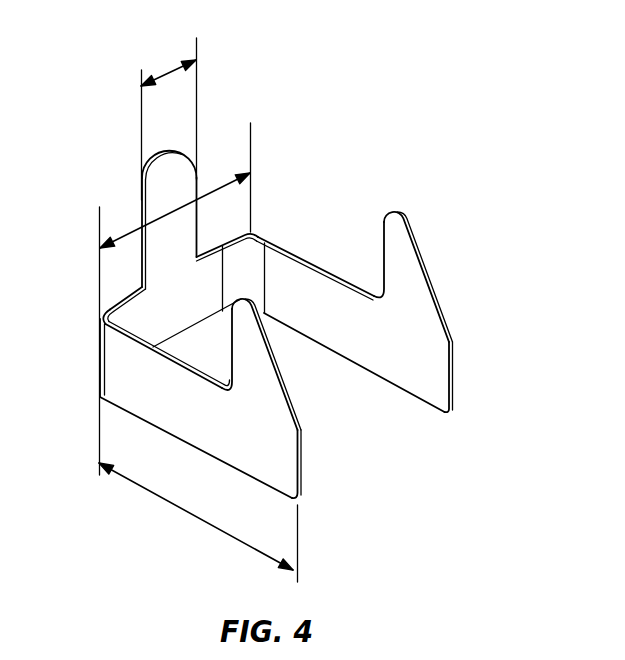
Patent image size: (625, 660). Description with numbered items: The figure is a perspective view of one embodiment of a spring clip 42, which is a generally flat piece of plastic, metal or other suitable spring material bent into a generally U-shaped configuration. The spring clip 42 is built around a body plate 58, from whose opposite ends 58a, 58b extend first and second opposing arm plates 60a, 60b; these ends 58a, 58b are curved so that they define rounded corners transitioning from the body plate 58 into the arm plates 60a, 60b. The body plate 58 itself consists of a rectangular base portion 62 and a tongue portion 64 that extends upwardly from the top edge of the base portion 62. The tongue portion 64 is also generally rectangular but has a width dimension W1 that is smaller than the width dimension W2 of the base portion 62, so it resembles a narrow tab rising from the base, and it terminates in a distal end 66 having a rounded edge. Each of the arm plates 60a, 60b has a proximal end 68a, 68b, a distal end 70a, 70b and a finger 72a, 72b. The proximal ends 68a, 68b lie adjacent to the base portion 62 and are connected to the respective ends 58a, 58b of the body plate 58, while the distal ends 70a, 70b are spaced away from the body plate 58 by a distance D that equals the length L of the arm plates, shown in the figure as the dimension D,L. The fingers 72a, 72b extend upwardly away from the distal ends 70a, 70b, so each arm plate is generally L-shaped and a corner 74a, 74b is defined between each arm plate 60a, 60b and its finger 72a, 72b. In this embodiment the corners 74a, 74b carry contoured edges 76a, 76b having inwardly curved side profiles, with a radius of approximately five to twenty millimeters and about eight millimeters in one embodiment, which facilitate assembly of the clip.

The spring clip 42 is at (327, 285).
The body plate 58 is at (131, 319).
The first end of body plate 58a is at (101, 334).
The second end of body plate 58b is at (213, 266).
The first arm plate 60a is at (167, 410).
The second arm plate 60b is at (330, 317).
The base portion 62 is at (187, 306).
The tongue portion 64 is at (142, 206).
The distal end of tongue portion 66 is at (172, 149).
The proximal end of first arm plate 68a is at (113, 394).
The proximal end of second arm plate 68b is at (289, 262).
The distal end of first arm plate 70a is at (302, 470).
The distal end of second arm plate 70b is at (452, 388).
The first finger 72a is at (286, 403).
The second finger 72b is at (428, 287).
The first corner 74a is at (228, 377).
The first contoured edge 76a is at (225, 362).
The second corner 74b is at (380, 289).
The second contoured edge 76b is at (375, 285).
The width dimension of tongue portion W1 is at (170, 58).
The width dimension of base portion W2 is at (215, 190).
The distance and length of arm plates D,L is at (198, 522).